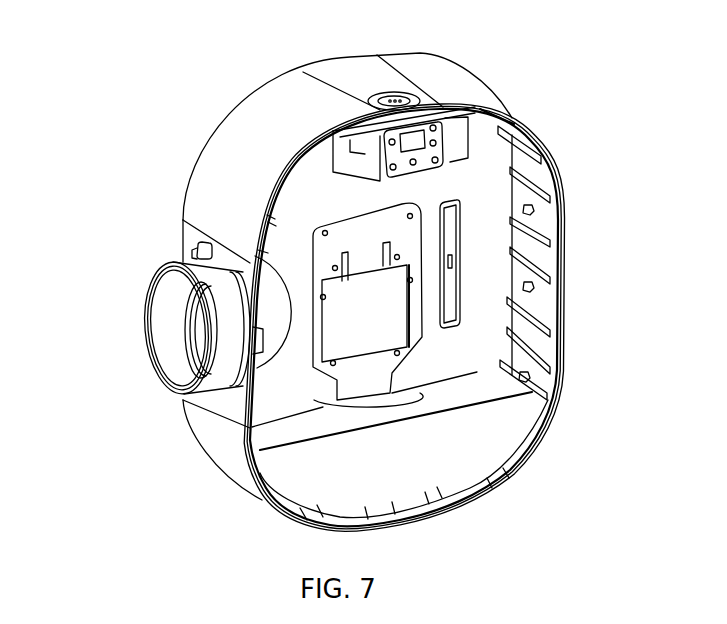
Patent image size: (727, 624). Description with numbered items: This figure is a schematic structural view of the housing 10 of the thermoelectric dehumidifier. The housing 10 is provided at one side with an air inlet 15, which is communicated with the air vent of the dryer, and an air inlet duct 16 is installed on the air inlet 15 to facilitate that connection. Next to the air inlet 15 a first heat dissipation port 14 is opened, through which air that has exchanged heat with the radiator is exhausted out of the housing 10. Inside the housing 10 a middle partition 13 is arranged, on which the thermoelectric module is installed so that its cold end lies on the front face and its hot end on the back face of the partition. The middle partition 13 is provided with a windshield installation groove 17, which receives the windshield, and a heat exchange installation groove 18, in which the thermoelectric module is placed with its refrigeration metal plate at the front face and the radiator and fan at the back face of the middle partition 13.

The housing 10 is at (453, 82).
The middle partition 13 is at (490, 195).
The first heat dissipation port 14 is at (197, 246).
The air inlet 15 is at (193, 338).
The air inlet duct 16 is at (158, 293).
The windshield installation groove 17 is at (452, 281).
The heat exchange installation groove 18 is at (383, 322).